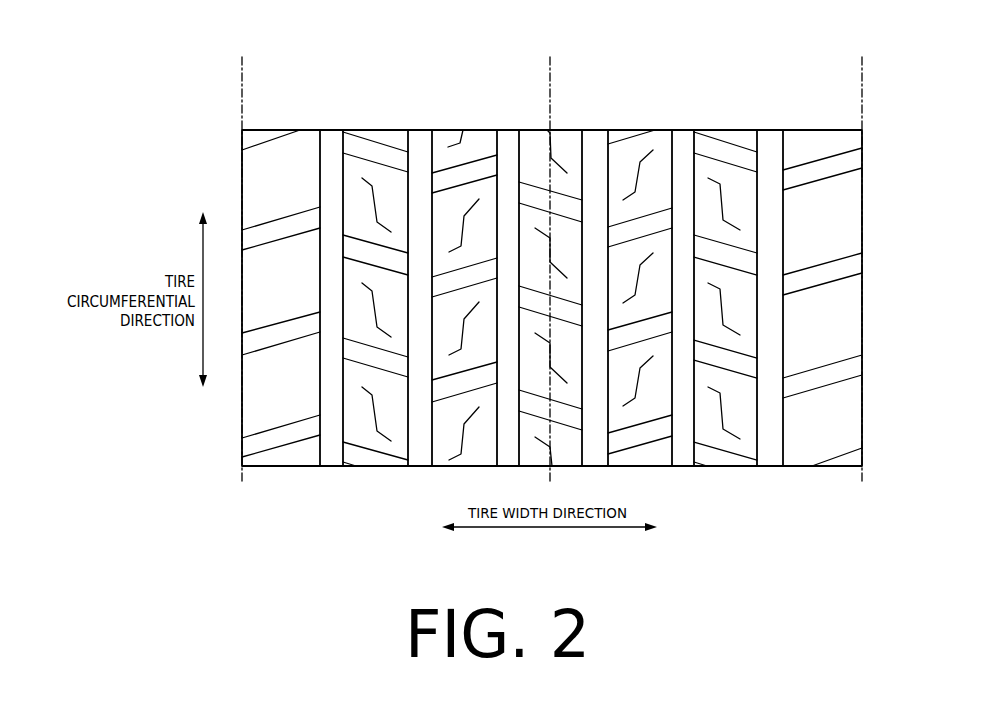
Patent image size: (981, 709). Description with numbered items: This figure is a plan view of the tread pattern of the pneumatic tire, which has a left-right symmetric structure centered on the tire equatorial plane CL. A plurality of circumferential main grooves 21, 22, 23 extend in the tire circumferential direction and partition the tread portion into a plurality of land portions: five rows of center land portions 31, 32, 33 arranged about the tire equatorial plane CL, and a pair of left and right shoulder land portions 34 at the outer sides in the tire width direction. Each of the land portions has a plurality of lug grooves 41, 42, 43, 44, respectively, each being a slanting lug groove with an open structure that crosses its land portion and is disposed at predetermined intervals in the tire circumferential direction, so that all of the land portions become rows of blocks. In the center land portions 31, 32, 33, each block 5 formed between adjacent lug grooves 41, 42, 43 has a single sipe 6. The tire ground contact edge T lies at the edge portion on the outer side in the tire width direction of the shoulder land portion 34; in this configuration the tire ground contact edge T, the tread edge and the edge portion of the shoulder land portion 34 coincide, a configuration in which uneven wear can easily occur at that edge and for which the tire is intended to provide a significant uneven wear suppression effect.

The block 5 is at (549, 253).
The sipe 6 is at (535, 130).
The circumferential main groove 21 is at (509, 130).
The circumferential main groove 22 is at (420, 130).
The circumferential main groove 23 is at (335, 130).
The center land portion 31 is at (561, 235).
The center land portion 32 is at (552, 256).
The center land portion 33 is at (550, 262).
The shoulder land portion 34 is at (536, 262).
The lug groove 41 is at (536, 197).
The lug groove 42 is at (448, 181).
The lug groove 43 is at (353, 148).
The lug groove 44 is at (255, 236).
The tire equatorial plane CL is at (551, 261).
The tire ground contact edge T is at (551, 260).